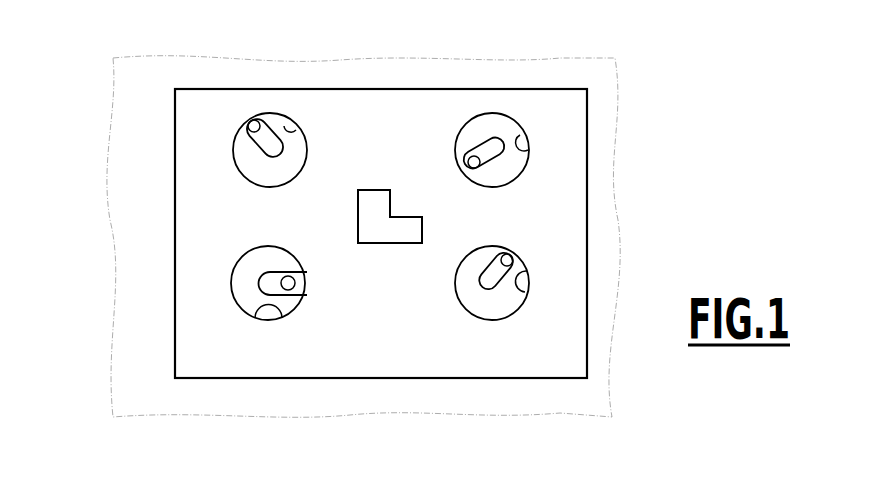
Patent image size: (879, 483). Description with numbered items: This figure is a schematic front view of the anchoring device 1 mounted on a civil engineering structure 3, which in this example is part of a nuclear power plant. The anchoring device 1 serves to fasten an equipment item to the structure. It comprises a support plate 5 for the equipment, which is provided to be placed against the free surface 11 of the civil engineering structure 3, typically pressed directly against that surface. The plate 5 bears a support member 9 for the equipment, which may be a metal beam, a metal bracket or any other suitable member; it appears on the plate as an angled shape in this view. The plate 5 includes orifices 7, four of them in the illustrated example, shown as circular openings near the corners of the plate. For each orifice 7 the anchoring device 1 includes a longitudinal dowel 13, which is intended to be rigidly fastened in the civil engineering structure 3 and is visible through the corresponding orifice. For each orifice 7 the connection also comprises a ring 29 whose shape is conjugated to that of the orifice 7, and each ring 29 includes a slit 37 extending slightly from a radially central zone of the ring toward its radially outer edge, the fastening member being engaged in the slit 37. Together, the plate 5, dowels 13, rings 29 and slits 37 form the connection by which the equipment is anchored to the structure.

The anchoring device 1 is at (150, 108).
The civil engineering structure 3 is at (618, 370).
The support plate 5 is at (552, 107).
The orifice 7 is at (284, 130).
The support member 9 is at (377, 205).
The free surface 11 is at (150, 263).
The longitudinal dowel 13 is at (256, 124).
The ring 29 is at (257, 172).
The slit 37 is at (248, 139).